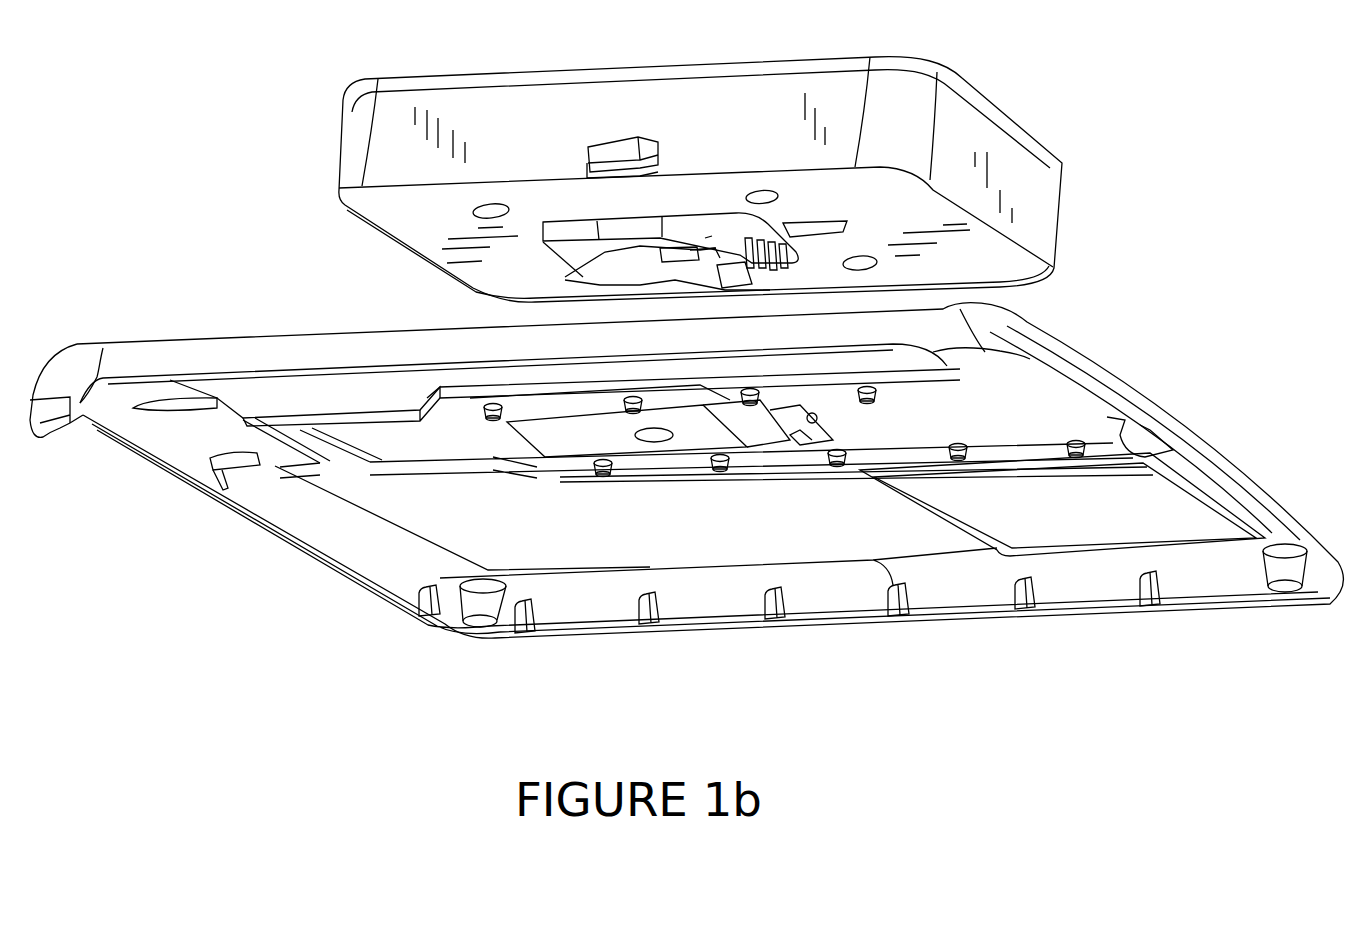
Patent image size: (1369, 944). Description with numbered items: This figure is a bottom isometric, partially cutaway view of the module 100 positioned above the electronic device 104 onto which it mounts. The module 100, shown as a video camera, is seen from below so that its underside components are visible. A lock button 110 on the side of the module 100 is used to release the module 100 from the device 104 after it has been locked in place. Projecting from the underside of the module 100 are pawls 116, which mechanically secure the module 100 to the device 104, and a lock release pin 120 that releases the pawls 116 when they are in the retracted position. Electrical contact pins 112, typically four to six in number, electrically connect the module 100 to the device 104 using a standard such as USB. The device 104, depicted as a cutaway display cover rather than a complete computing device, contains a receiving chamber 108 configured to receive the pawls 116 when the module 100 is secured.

The module 100 is at (1020, 128).
The electronic device 104 is at (1230, 463).
The receiving chamber 108 is at (703, 403).
The lock button 110 is at (607, 150).
The electrical contact pins 112 is at (782, 268).
The pawls 116 is at (565, 277).
The lock release pin 120 is at (702, 250).